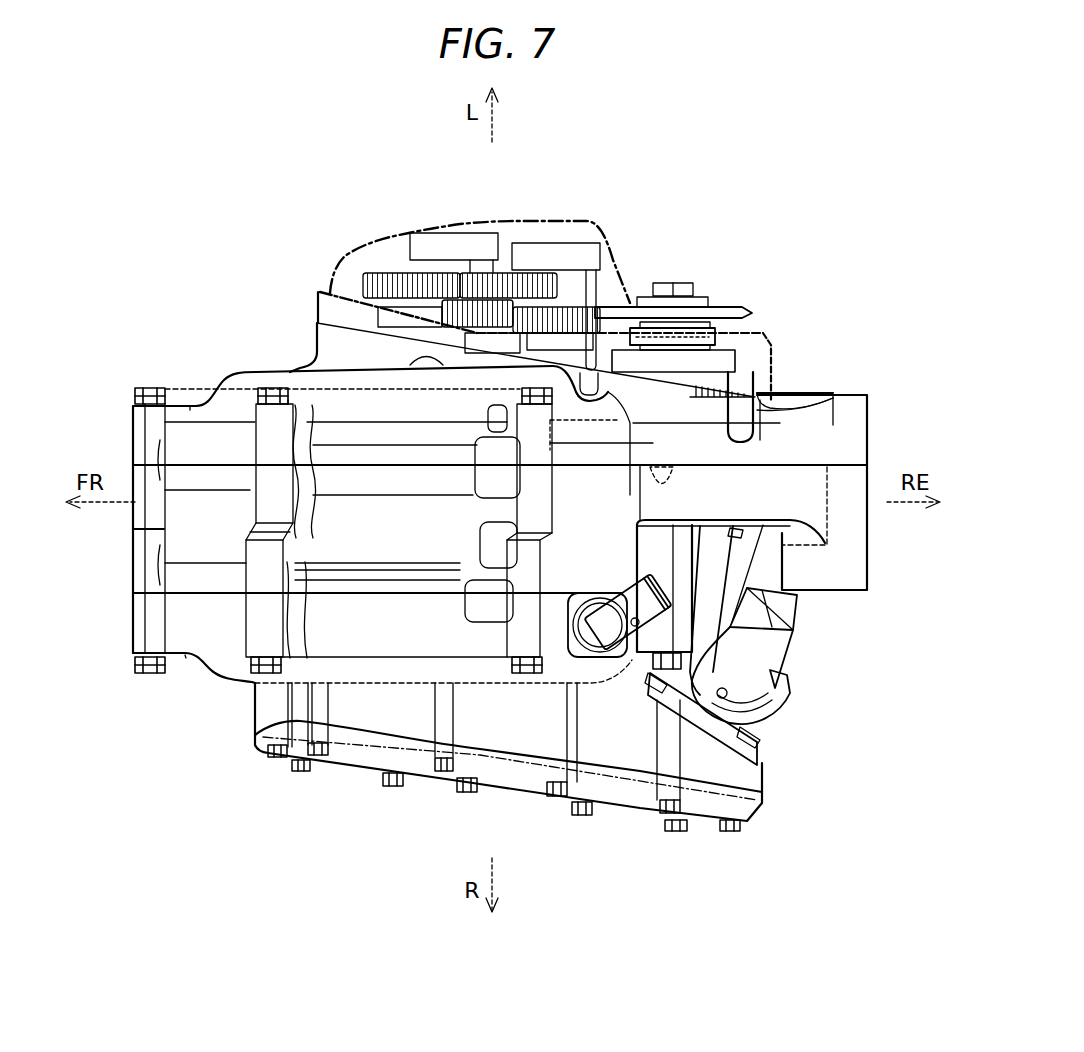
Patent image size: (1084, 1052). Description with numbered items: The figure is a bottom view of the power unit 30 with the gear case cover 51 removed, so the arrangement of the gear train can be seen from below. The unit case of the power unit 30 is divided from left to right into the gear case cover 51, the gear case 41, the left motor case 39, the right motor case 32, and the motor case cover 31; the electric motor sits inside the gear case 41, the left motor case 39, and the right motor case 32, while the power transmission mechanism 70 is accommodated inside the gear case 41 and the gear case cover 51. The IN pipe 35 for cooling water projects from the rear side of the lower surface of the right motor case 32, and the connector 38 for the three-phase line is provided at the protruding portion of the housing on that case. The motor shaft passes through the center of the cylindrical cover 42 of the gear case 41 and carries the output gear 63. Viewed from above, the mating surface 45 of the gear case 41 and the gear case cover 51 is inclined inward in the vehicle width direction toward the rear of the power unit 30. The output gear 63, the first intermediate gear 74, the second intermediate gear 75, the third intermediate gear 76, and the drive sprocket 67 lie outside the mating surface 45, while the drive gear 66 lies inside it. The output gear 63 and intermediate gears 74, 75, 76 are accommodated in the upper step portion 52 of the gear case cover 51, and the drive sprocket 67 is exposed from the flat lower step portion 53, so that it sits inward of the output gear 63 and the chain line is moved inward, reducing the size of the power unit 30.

The power unit 30 is at (180, 298).
The motor case cover 31 is at (365, 762).
The right motor case 32 is at (186, 660).
The IN pipe 35 is at (640, 656).
The connector 38 is at (772, 640).
The left motor case 39 is at (140, 545).
The gear case 41 is at (190, 406).
The cylindrical cover 42 is at (288, 400).
The mating surface 45 is at (594, 360).
The gear case cover 51 is at (320, 290).
The upper step portion 52 is at (598, 225).
The lower step portion 53 is at (760, 325).
The output gear 63 is at (373, 271).
The drive gear 66 is at (770, 372).
The drive sprocket 67 is at (727, 305).
The power transmission mechanism 70 is at (645, 250).
The first intermediate gear 74 is at (503, 272).
The second intermediate gear 75 is at (470, 313).
The third intermediate gear 76 is at (567, 310).